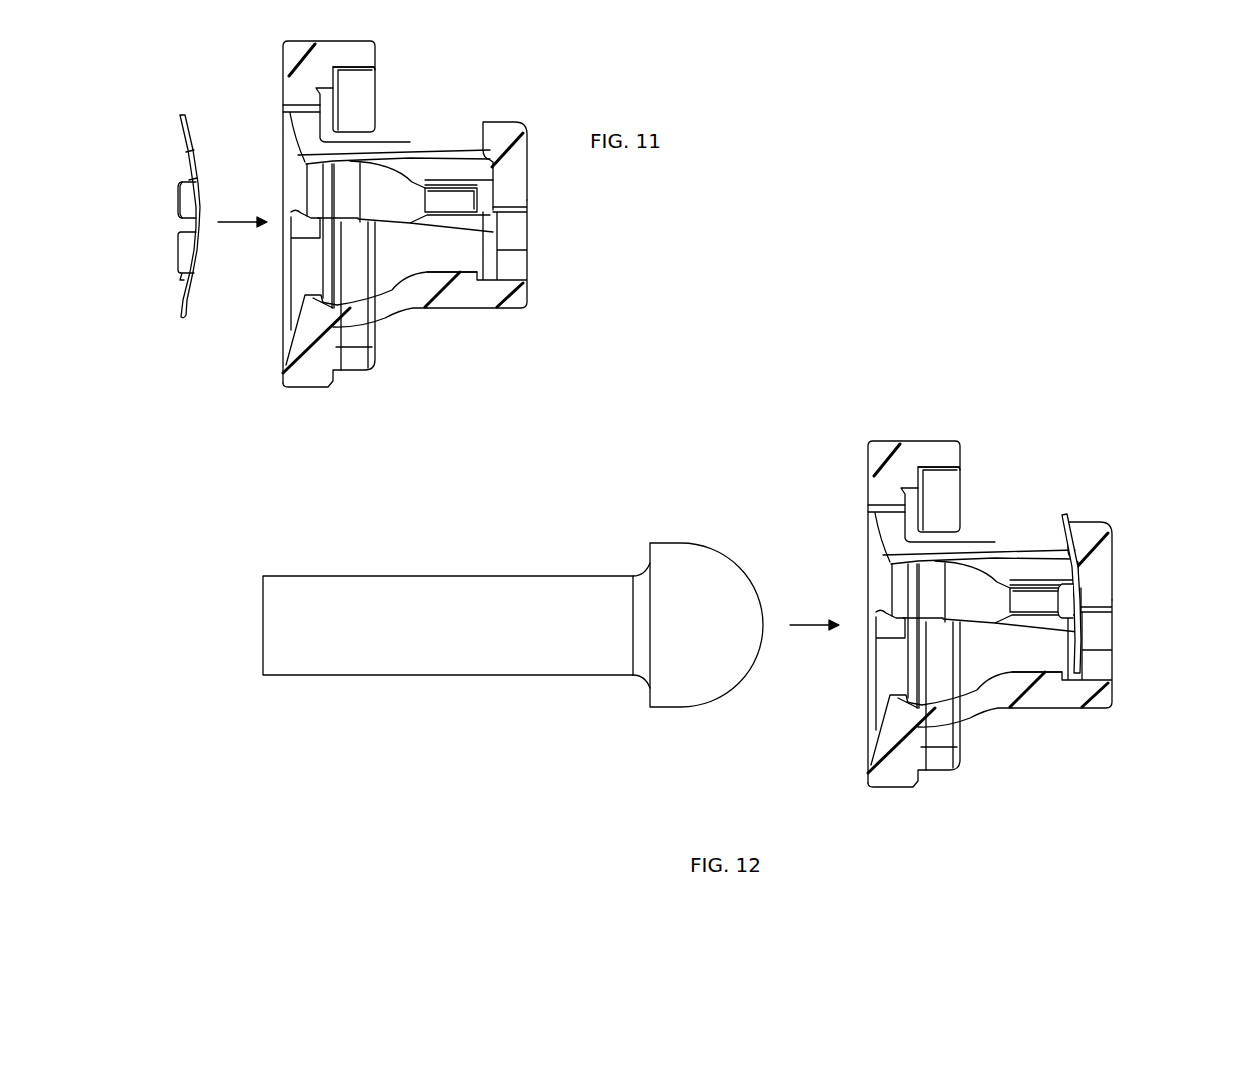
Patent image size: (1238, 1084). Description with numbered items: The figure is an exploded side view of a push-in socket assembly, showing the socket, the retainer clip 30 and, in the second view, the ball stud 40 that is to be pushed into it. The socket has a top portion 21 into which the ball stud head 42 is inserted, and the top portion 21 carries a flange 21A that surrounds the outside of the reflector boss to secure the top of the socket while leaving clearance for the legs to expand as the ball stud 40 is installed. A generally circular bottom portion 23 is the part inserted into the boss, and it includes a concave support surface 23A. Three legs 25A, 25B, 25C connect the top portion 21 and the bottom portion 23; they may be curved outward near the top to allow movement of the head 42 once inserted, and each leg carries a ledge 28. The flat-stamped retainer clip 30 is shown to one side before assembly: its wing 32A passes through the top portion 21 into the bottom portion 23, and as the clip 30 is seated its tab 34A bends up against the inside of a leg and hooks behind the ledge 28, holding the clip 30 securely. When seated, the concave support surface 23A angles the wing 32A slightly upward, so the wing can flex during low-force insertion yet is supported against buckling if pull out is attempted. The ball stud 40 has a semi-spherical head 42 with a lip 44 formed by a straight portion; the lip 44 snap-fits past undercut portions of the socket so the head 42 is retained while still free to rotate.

In FIG. 11, the top portion 21 is at (380, 392).
In FIG. 12, the top portion 21 is at (970, 649).
In FIG. 11, the flange 21A is at (353, 50).
In FIG. 12, the flange 21A is at (968, 479).
In FIG. 11, the bottom portion 23 is at (530, 325).
In FIG. 12, the bottom portion 23 is at (1062, 695).
In FIG. 11, the concave support surface 23A is at (495, 150).
In FIG. 12, the concave support surface 23A is at (1090, 566).
In FIG. 11, the leg 25A is at (407, 308).
In FIG. 12, the leg 25A is at (980, 723).
In FIG. 11, the leg 25B is at (402, 277).
In FIG. 12, the leg 25B is at (966, 720).
In FIG. 11, the leg 25C is at (402, 152).
In FIG. 12, the leg 25C is at (979, 536).
In FIG. 11, the ledge 28 is at (463, 197).
In FIG. 12, the ledge 28 is at (1044, 552).
In FIG. 11, the retainer clip 30 is at (182, 260).
In FIG. 12, the retainer clip 30 is at (1083, 597).
In FIG. 11, the wing 32A is at (188, 147).
In FIG. 12, the wing 32A is at (1068, 520).
In FIG. 11, the tab 34A is at (178, 200).
In FIG. 12, the tab 34A is at (1067, 594).
In FIG. 12, the ball stud 40 is at (465, 674).
In FIG. 12, the head 42 is at (722, 683).
In FIG. 12, the lip 44 is at (650, 675).